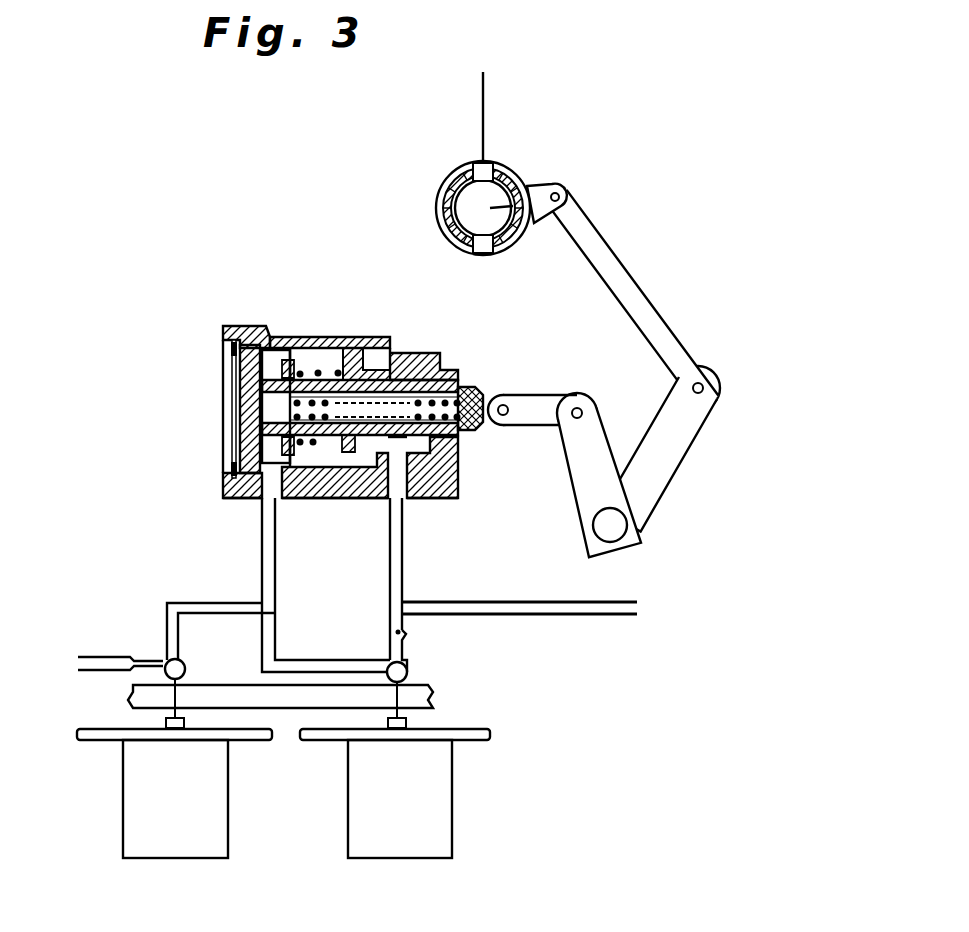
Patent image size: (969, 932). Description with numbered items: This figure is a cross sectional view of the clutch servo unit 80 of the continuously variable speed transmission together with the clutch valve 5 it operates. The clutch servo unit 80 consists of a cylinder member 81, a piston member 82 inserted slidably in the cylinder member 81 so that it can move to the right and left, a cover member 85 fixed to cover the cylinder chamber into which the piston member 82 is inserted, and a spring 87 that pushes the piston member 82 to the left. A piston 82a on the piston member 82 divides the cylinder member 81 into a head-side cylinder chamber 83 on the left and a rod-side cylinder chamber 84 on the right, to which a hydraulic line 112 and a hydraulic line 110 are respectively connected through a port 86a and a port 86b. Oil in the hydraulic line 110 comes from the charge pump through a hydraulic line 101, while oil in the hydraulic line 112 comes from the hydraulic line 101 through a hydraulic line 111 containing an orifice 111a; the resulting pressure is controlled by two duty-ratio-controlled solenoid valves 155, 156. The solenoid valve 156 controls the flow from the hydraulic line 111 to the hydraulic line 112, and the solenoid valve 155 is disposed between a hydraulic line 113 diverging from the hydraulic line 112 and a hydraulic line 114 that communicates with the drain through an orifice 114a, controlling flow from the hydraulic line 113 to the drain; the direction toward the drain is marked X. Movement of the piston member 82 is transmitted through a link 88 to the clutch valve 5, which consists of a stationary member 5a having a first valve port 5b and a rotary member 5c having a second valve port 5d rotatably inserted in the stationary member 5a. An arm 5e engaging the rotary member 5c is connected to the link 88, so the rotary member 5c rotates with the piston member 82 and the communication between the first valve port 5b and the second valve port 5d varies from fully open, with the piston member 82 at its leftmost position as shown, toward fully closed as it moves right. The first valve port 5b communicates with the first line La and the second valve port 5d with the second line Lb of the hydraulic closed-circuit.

The clutch valve 5 is at (561, 314).
The stationary member 5a is at (438, 211).
The first valve port 5b is at (479, 162).
The rotary member 5c is at (456, 238).
The second valve port 5d is at (494, 257).
The arm 5e is at (560, 188).
The first line La is at (485, 103).
The second line Lb is at (538, 222).
The link 88 is at (690, 325).
The clutch servo unit 80 is at (326, 401).
The cylinder member 81 is at (338, 337).
The piston member 82 is at (400, 376).
The piston 82a is at (278, 363).
The head-side cylinder chamber 83 is at (262, 365).
The rod-side cylinder chamber 84 is at (370, 352).
The cover member 85 is at (238, 357).
The port 86a is at (262, 508).
The port 86b is at (400, 503).
The spring 87 is at (308, 500).
The hydraulic line 110 is at (473, 585).
The hydraulic line 111 is at (402, 650).
The orifice 111a is at (402, 632).
The hydraulic line 112 is at (275, 572).
The hydraulic line 113 is at (203, 600).
The hydraulic line 114 is at (89, 645).
The orifice 114a is at (137, 657).
The direction X is at (59, 666).
The hydraulic line 101 is at (587, 616).
The solenoid valve 155 is at (190, 858).
The solenoid valve 156 is at (418, 858).